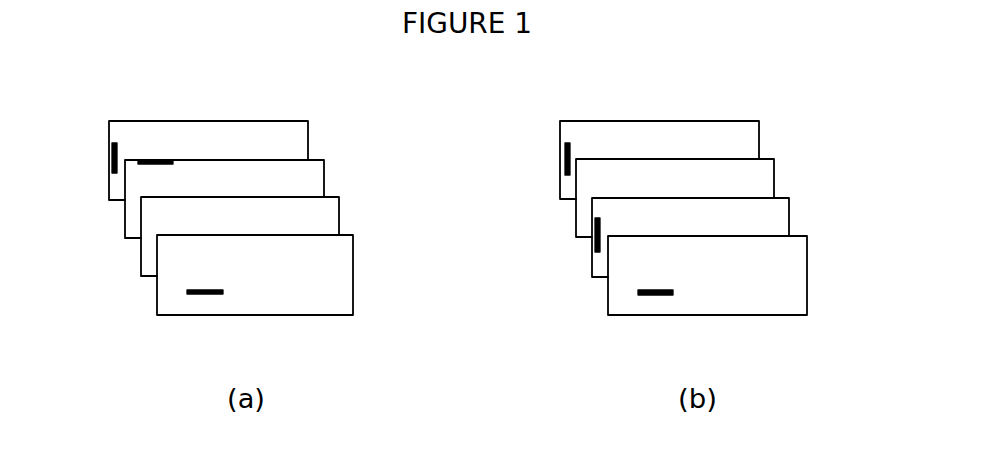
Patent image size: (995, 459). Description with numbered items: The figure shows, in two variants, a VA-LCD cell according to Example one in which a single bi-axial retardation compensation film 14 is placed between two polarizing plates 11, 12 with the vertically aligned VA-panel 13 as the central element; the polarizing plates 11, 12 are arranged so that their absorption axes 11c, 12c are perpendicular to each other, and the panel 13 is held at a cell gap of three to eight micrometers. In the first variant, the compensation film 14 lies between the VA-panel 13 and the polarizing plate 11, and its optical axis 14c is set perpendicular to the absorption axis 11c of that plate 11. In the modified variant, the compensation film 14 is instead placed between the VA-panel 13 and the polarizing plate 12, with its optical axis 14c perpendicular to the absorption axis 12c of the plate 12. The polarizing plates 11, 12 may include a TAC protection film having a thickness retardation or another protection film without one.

The polarizing plate 11 is at (308, 131).
The polarizing plate 12 is at (353, 262).
The VA-panel 13 is at (339, 214).
The bi-axial retardation compensation film 14 is at (324, 178).
The absorption axis 11c is at (112, 158).
The absorption axis 12c is at (204, 294).
The optical axis 14c is at (140, 163).